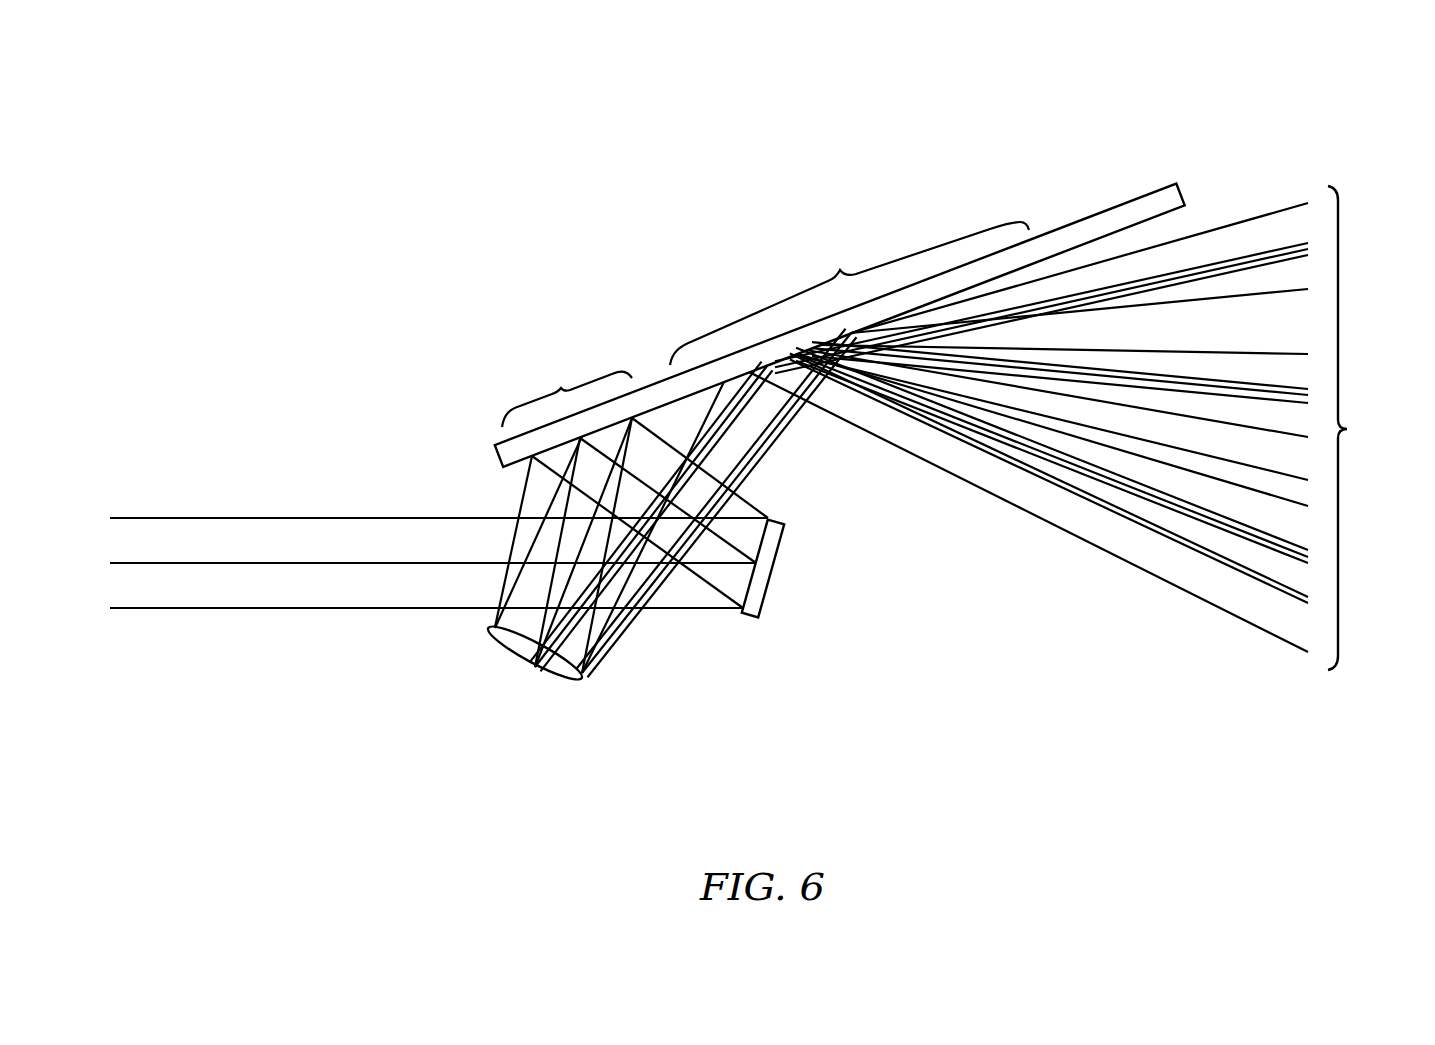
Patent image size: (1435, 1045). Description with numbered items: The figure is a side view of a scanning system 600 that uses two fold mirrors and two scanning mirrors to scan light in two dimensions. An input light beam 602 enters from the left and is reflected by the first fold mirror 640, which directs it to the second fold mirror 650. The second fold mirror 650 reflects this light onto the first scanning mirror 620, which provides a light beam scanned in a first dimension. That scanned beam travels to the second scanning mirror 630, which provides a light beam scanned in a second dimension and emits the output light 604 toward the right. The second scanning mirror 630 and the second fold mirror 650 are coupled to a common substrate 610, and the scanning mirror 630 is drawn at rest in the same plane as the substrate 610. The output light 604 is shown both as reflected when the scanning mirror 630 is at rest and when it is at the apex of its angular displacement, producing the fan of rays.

The scanning system 600 is at (328, 159).
The input light beam 602 is at (222, 608).
The output light 604 is at (1349, 428).
The common substrate 610 is at (1172, 180).
The first scanning mirror 620 is at (555, 680).
The second scanning mirror 630 is at (840, 266).
The first fold mirror 640 is at (756, 619).
The second fold mirror 650 is at (561, 386).